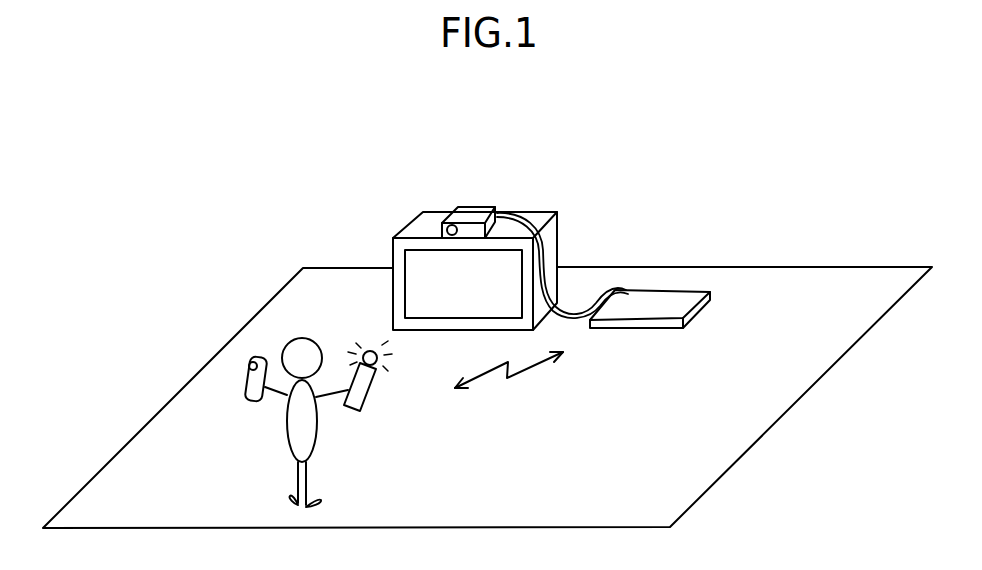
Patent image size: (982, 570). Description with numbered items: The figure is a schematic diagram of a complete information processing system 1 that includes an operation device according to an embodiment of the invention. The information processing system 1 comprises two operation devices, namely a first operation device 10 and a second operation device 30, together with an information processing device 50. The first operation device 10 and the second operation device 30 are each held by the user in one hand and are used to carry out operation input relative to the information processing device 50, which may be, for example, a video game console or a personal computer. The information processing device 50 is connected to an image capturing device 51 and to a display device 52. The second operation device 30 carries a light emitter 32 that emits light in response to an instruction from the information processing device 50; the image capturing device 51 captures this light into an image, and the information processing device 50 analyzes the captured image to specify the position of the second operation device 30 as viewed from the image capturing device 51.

The information processing system 1 is at (697, 214).
The first operation device 10 is at (250, 403).
The second operation device 30 is at (370, 402).
The light emitter 32 is at (367, 349).
The information processing device 50 is at (663, 332).
The image capturing device 51 is at (478, 205).
The display device 52 is at (393, 256).